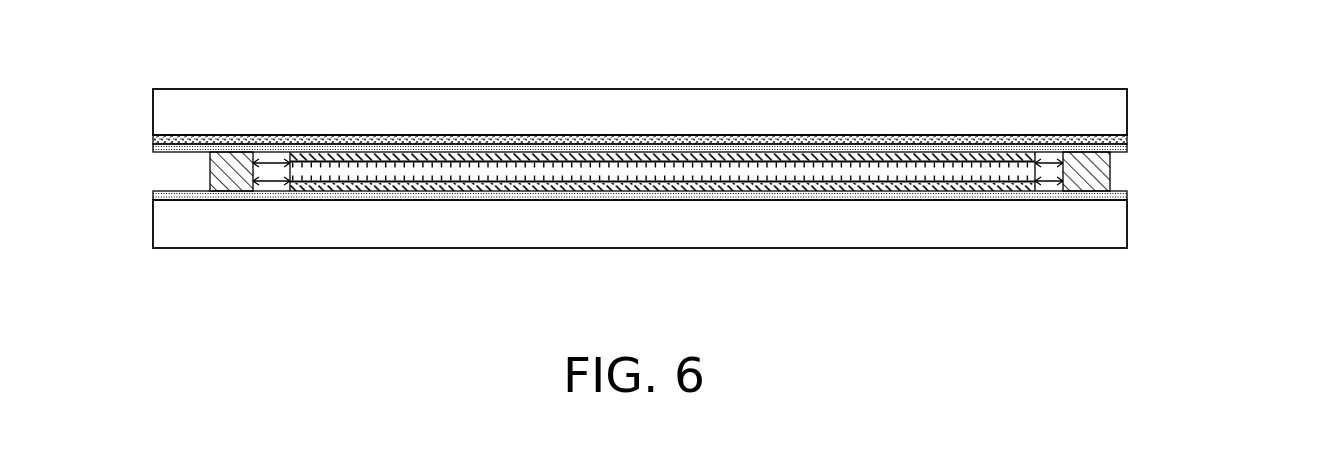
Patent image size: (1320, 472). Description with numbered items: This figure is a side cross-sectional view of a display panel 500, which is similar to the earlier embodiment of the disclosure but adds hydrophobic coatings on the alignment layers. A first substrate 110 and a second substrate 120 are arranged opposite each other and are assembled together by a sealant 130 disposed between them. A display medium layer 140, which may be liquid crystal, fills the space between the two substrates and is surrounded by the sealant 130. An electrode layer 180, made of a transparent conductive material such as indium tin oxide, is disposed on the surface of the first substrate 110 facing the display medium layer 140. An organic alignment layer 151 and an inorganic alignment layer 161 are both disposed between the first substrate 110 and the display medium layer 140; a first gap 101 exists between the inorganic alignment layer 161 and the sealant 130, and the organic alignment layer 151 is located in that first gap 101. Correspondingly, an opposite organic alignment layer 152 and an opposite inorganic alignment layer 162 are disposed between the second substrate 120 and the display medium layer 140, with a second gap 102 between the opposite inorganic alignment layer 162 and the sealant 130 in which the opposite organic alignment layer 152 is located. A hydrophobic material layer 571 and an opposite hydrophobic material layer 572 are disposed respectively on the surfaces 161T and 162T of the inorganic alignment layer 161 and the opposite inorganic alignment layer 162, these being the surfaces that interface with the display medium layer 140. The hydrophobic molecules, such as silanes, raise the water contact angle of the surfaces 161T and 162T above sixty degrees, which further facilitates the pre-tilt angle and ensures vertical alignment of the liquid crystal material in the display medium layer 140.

The display panel 500 is at (1295, 328).
The first substrate 110 is at (1118, 108).
The second substrate 120 is at (1110, 233).
The electrode layer 180 is at (1127, 140).
The organic alignment layer 151 is at (1127, 150).
The opposite organic alignment layer 152 is at (1122, 196).
The sealant 130 is at (233, 185).
The display medium layer 140 is at (662, 227).
The inorganic alignment layer 161 is at (895, 157).
The opposite inorganic alignment layer 162 is at (965, 188).
The surface of the inorganic alignment layer 161T is at (673, 160).
The surface of the opposite inorganic alignment layer 162T is at (593, 184).
The hydrophobic material layer 571 is at (488, 163).
The opposite hydrophobic material layer 572 is at (463, 182).
The first gap 101 is at (272, 160).
The second gap 102 is at (272, 185).